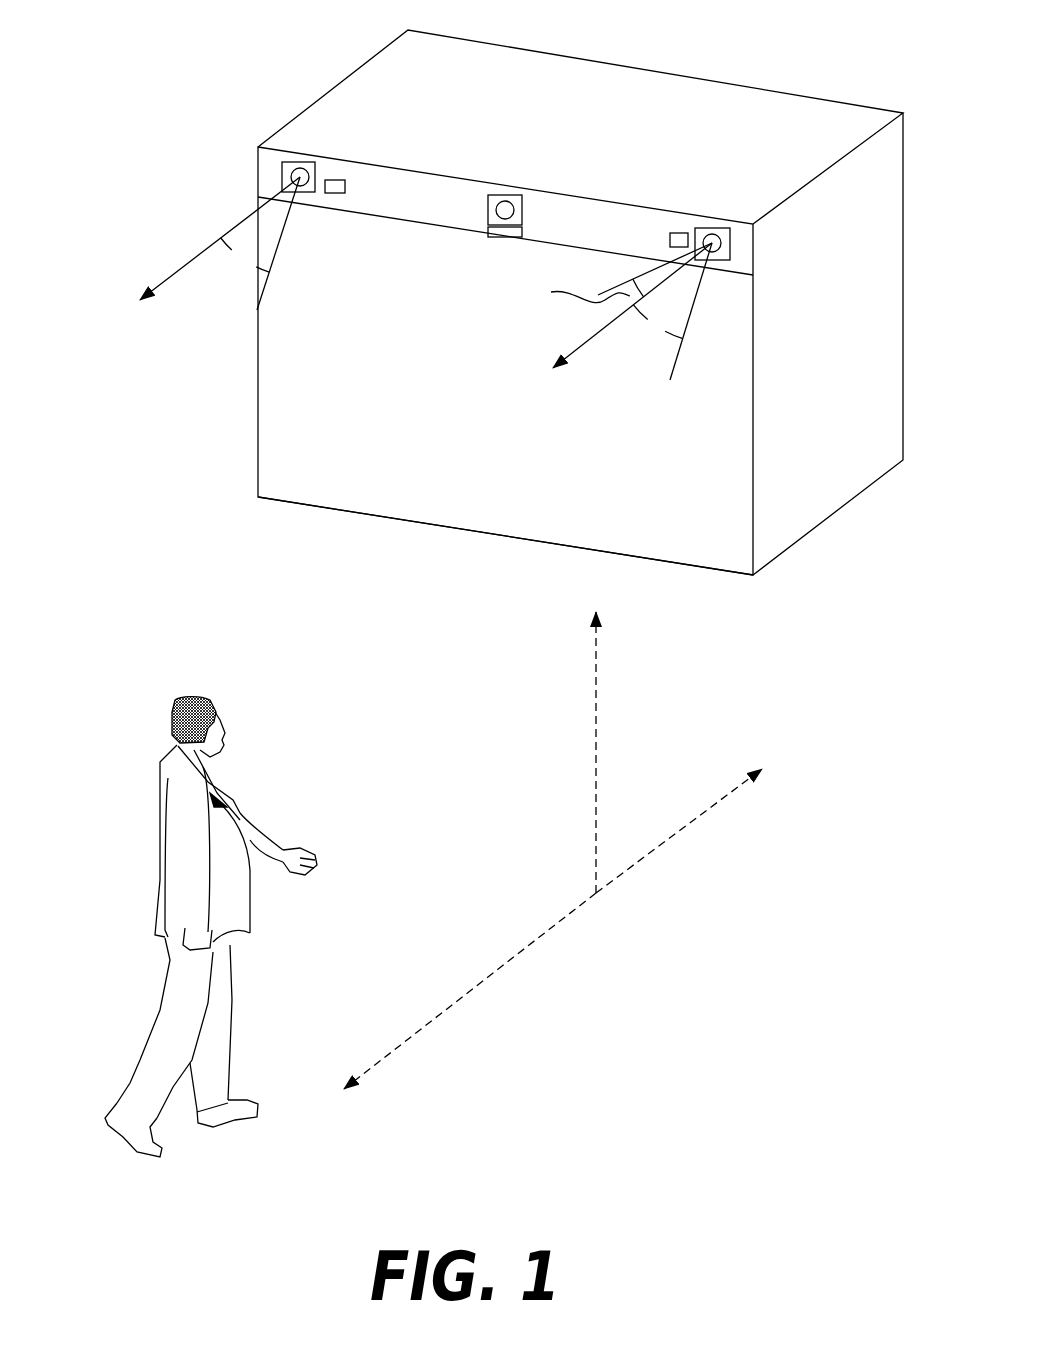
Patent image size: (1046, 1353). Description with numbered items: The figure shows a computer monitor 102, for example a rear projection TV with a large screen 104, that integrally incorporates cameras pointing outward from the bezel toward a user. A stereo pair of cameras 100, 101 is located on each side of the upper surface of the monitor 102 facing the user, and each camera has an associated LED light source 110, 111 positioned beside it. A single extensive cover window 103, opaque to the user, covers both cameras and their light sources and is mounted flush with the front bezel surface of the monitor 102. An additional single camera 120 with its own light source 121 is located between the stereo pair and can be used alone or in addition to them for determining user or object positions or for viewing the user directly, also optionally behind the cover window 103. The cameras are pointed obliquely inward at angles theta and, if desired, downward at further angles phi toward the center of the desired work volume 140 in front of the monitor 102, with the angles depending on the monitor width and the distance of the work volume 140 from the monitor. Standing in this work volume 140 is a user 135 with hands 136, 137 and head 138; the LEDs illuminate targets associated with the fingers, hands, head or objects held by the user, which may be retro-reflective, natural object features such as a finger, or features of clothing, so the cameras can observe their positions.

The camera 100 is at (283, 175).
The camera 101 is at (735, 242).
The monitor 102 is at (813, 532).
The cover window 103 is at (735, 277).
The screen 104 is at (713, 555).
The light source 110 is at (332, 178).
The light source 111 is at (680, 227).
The single camera 120 is at (503, 195).
The light source 121 is at (497, 235).
The user 135 is at (230, 878).
The hand 136 is at (247, 930).
The hand 137 is at (305, 850).
The head 138 is at (180, 697).
The work volume 140 is at (597, 813).